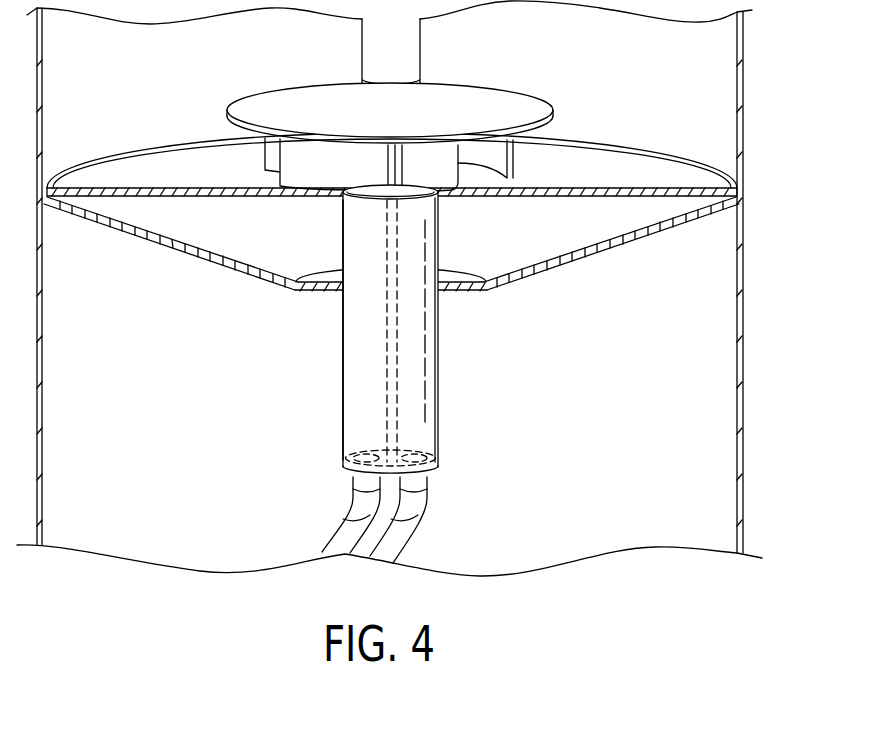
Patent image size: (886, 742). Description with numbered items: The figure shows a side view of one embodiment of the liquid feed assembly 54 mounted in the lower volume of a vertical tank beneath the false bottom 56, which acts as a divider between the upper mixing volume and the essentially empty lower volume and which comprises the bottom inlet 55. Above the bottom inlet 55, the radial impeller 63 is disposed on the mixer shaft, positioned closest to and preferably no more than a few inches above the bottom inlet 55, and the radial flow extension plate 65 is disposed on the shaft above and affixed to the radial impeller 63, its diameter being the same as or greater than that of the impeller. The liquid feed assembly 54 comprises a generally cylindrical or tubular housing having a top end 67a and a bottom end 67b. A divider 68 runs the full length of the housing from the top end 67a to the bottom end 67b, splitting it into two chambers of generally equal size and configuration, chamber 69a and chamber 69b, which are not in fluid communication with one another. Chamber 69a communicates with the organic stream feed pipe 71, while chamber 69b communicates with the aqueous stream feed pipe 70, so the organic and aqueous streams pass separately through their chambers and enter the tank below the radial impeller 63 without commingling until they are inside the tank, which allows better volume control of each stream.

The liquid feed assembly 54 is at (500, 343).
The bottom inlet 55 is at (327, 288).
The false bottom 56 is at (690, 175).
The radial impeller 63 is at (545, 163).
The radial flow extension plate 65 is at (288, 97).
The top end 67a is at (443, 295).
The bottom end 67b is at (440, 460).
The divider 68 is at (390, 305).
The chamber 69a is at (413, 382).
The chamber 69b is at (366, 382).
The aqueous stream feed pipe 70 is at (400, 537).
The organic stream feed pipe 71 is at (344, 530).